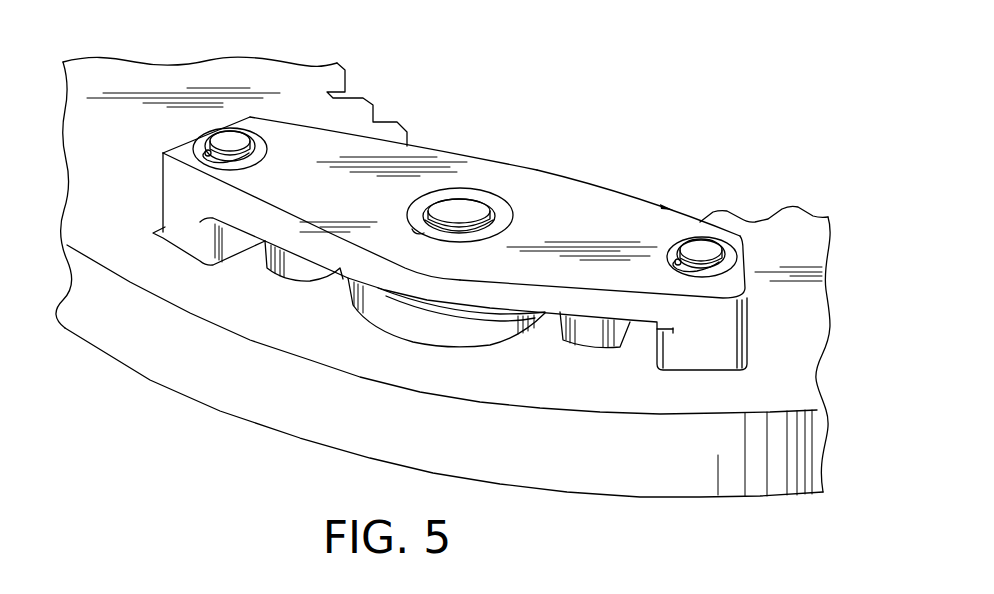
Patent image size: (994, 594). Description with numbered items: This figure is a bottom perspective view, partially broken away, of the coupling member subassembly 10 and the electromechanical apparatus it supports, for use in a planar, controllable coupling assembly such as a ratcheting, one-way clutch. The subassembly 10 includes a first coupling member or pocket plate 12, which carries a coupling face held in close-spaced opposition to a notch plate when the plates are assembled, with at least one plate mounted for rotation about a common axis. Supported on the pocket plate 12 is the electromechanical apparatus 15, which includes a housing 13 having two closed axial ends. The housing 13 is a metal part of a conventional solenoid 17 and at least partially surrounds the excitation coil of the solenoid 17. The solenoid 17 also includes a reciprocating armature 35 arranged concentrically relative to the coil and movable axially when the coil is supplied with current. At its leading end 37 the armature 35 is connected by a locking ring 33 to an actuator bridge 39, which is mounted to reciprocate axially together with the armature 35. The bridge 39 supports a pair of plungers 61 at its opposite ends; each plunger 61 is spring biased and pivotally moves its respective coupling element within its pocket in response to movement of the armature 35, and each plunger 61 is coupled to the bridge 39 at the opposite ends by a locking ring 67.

The coupling member subassembly 10 is at (675, 97).
The first coupling member 12 is at (576, 498).
The housing 13 is at (413, 348).
The electromechanical apparatus 15 is at (541, 171).
The solenoid 17 is at (470, 354).
The locking ring 33 is at (507, 217).
The armature 35 is at (470, 208).
The leading end 37 is at (460, 214).
The actuator bridge 39 is at (617, 191).
The plungers 61 is at (230, 137).
The locking ring 67 is at (207, 152).